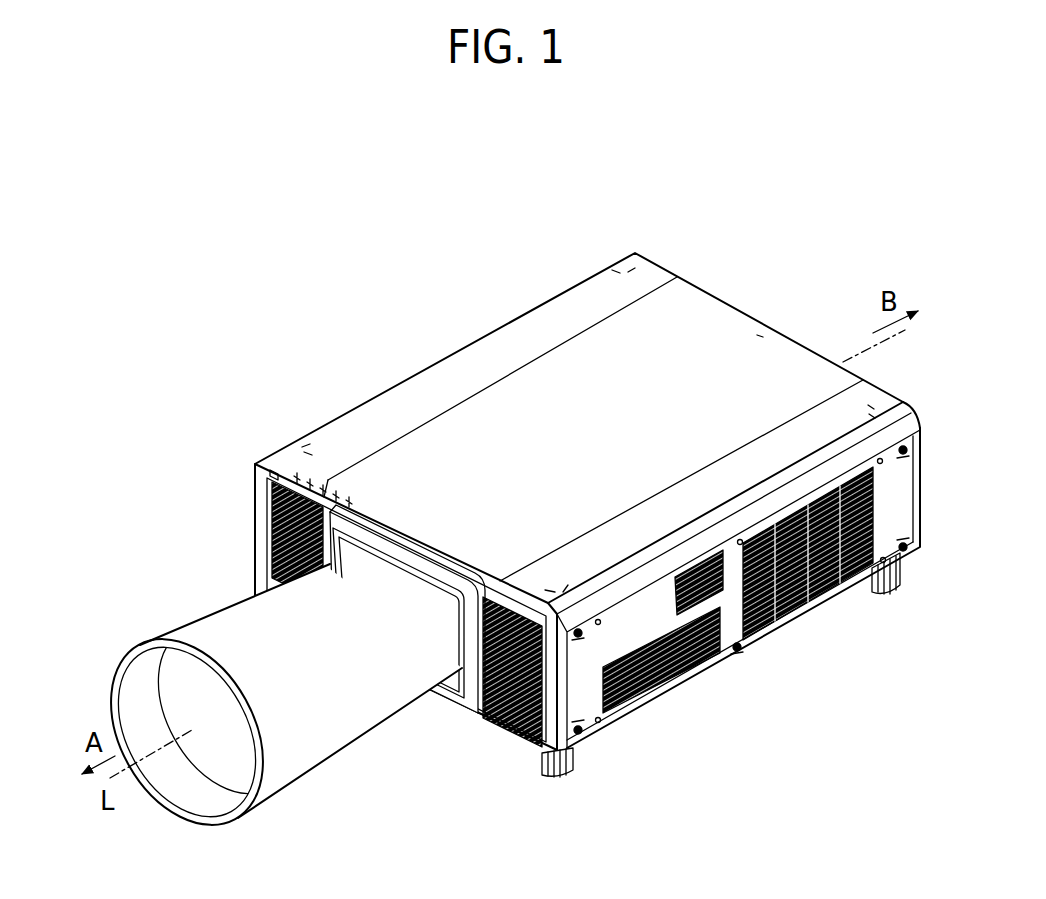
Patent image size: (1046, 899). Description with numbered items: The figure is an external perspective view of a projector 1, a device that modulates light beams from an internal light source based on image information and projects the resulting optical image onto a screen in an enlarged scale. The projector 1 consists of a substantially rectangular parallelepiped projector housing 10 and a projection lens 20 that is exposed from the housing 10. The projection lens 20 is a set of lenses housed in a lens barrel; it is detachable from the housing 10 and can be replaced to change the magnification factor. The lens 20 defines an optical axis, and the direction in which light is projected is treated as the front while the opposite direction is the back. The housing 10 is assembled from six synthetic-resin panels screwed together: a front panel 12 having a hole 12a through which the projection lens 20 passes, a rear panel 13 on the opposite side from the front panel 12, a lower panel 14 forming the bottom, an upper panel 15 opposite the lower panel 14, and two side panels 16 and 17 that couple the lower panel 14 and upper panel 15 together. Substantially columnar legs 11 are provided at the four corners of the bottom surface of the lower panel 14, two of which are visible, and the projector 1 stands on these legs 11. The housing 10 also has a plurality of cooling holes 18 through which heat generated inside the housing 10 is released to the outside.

The projector 1 is at (240, 291).
The projector housing 10 is at (260, 435).
The legs 11 is at (567, 773).
The front panel 12 is at (493, 725).
The hole 12a is at (447, 690).
The rear panel 13 is at (792, 337).
The lower panel 14 is at (650, 703).
The upper panel 15 is at (567, 360).
The side panel 16 is at (817, 600).
The side panel 17 is at (362, 403).
The cooling holes 18 is at (277, 538).
The projection lens 20 is at (232, 800).